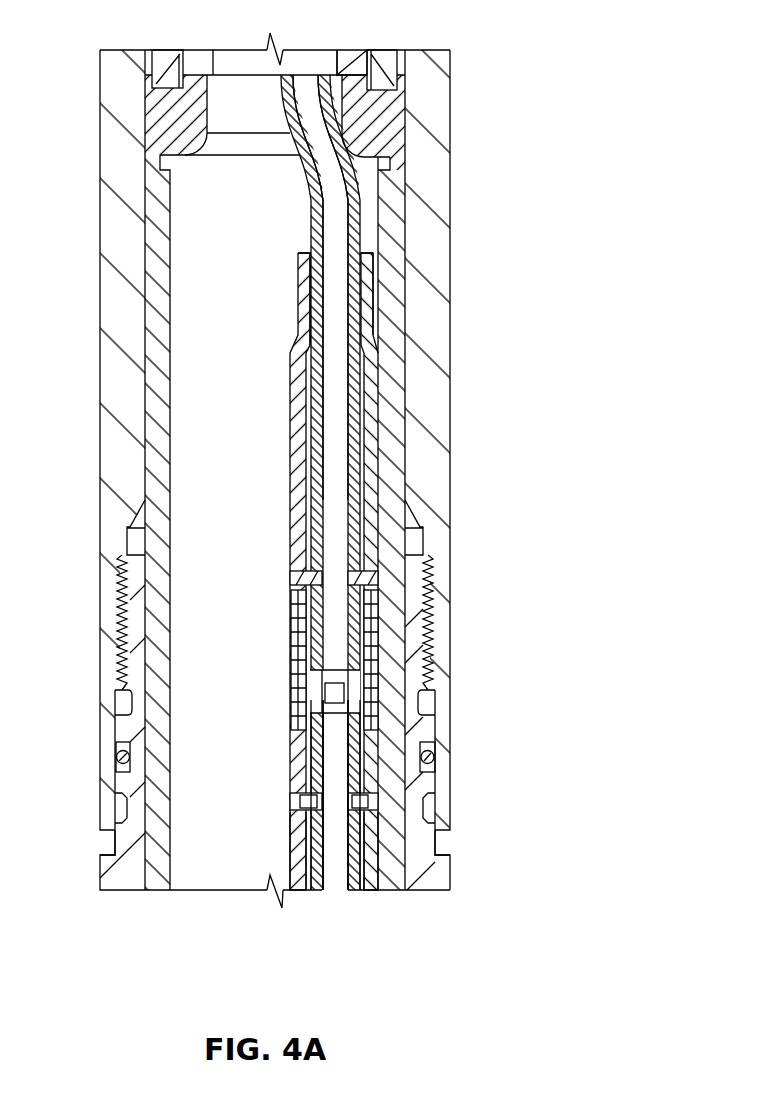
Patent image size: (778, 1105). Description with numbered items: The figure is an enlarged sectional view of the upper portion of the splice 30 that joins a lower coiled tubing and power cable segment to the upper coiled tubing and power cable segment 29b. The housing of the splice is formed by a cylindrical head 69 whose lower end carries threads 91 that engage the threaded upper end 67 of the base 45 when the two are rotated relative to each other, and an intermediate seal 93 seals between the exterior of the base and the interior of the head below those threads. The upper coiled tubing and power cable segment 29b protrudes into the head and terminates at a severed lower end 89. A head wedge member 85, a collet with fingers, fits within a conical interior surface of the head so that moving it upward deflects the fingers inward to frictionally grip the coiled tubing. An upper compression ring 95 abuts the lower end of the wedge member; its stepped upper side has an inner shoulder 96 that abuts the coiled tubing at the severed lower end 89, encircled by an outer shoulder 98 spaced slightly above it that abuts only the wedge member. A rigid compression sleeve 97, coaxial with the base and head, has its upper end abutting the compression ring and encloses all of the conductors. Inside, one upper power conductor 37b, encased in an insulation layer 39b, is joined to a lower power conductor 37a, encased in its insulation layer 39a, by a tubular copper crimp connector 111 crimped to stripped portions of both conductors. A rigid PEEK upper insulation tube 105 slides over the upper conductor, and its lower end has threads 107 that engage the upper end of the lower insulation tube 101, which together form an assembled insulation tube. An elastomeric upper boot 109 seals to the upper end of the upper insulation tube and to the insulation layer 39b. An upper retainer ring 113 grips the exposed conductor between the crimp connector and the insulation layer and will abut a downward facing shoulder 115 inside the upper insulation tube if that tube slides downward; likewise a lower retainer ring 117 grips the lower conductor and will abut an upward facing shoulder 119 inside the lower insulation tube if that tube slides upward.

The upper coiled tubing and power cable segment 29b is at (353, 65).
The splice 30 is at (488, 242).
The lower power conductor 37a is at (338, 890).
The upper power conductor 37b is at (322, 188).
The lower power conductor insulation layer 39a is at (313, 890).
The upper power conductor insulation layer 39b is at (312, 220).
The base 45 is at (122, 890).
The threaded upper end 67 is at (121, 612).
The head 69 is at (442, 187).
The head wedge member 85 is at (157, 58).
The severed lower end 89 is at (225, 77).
The threads 91 is at (127, 652).
The intermediate seal 93 is at (120, 745).
The upper compression ring 95 is at (400, 152).
The inner shoulder 96 is at (197, 72).
The compression sleeve 97 is at (392, 300).
The outer shoulder 98 is at (397, 75).
The lower insulation tube member 101 is at (292, 845).
The upper insulation tube member 105 is at (297, 453).
The threads 107 is at (293, 667).
The upper boot 109 is at (300, 287).
The electrical crimp connector 111 is at (292, 630).
The upper retainer ring 113 is at (292, 578).
The downward facing shoulder 115 is at (385, 578).
The lower retainer ring 117 is at (292, 800).
The upward facing shoulder 119 is at (308, 797).